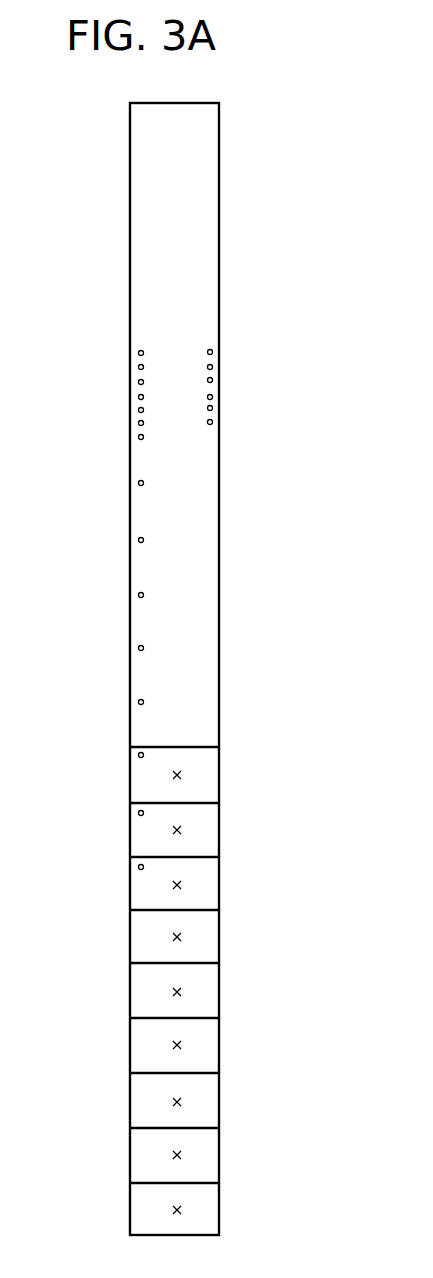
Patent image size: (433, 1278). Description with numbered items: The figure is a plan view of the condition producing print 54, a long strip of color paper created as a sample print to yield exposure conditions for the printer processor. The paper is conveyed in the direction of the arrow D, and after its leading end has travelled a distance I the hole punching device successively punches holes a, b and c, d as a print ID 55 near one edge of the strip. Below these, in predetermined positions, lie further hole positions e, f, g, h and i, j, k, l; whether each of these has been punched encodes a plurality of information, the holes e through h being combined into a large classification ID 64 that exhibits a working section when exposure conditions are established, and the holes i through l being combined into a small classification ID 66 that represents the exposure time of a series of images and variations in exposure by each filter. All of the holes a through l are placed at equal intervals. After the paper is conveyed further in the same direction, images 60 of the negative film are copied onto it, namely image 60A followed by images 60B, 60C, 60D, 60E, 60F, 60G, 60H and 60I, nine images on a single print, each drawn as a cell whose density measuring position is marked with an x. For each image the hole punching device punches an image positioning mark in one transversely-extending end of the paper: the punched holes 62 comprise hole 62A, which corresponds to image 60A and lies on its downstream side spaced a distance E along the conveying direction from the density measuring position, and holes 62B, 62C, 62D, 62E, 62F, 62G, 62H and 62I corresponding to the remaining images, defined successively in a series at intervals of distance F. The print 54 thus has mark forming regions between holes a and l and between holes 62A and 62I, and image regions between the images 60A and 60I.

The condition producing print 54 is at (219, 272).
The print ID 55 is at (221, 350).
The large classification ID 64 is at (221, 378).
The small classification ID 66 is at (221, 407).
The punched holes 62 is at (127, 867).
The punched hole 62A is at (157, 437).
The punched hole 62B is at (144, 482).
The punched hole 62C is at (144, 539).
The punched hole 62D is at (144, 594).
The punched hole 62E is at (144, 647).
The punched hole 62F is at (144, 701).
The punched hole 62G is at (143, 753).
The punched hole 62H is at (144, 813).
The punched hole 62I is at (143, 865).
The images 60 is at (288, 1223).
The image 60A is at (221, 790).
The image 60B is at (221, 854).
The image 60C is at (221, 904).
The image 60D is at (221, 959).
The image 60E is at (221, 1011).
The image 60F is at (221, 1063).
The image 60G is at (221, 1114).
The image 60H is at (221, 1168).
The image 60I is at (221, 1221).
The arrow D is at (231, 114).
The distance I is at (69, 104).
The distance E is at (51, 820).
The distance F is at (62, 437).
The hole a is at (144, 352).
The hole b is at (207, 350).
The hole c is at (144, 366).
The hole d is at (207, 366).
The hole e is at (144, 381).
The hole f is at (207, 380).
The hole g is at (144, 396).
The hole h is at (207, 397).
The hole i is at (144, 409).
The hole j is at (207, 409).
The hole k is at (157, 415).
The hole l is at (209, 425).